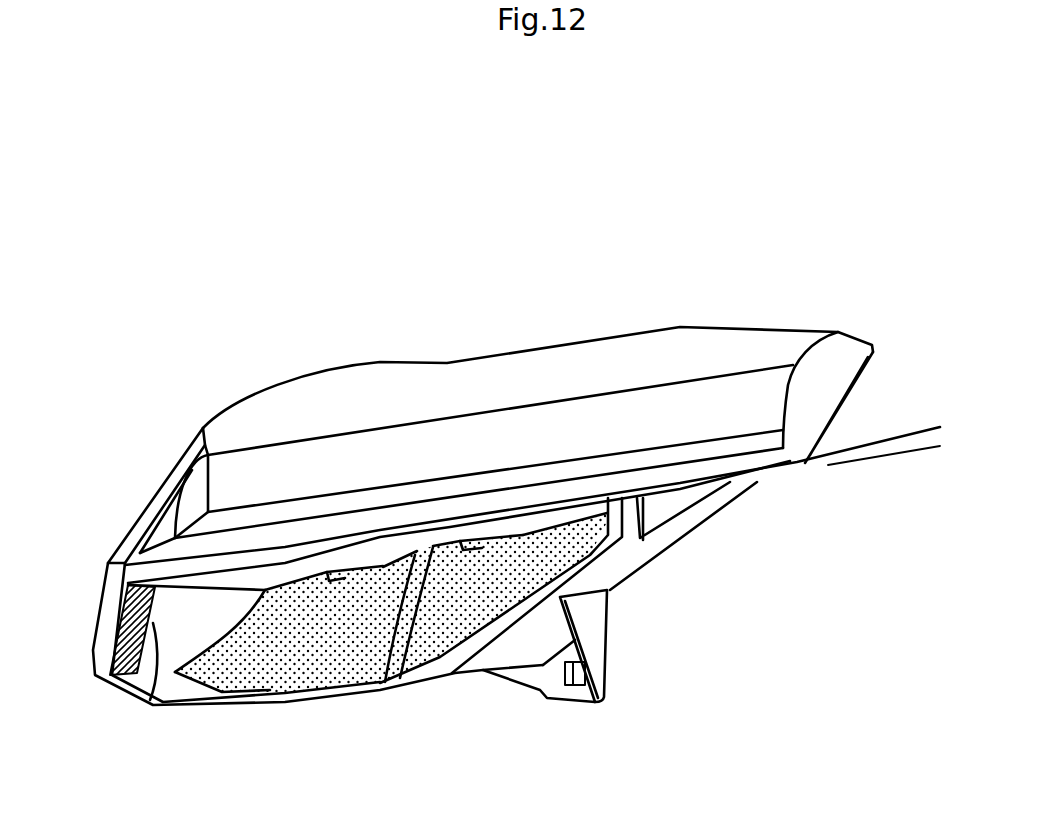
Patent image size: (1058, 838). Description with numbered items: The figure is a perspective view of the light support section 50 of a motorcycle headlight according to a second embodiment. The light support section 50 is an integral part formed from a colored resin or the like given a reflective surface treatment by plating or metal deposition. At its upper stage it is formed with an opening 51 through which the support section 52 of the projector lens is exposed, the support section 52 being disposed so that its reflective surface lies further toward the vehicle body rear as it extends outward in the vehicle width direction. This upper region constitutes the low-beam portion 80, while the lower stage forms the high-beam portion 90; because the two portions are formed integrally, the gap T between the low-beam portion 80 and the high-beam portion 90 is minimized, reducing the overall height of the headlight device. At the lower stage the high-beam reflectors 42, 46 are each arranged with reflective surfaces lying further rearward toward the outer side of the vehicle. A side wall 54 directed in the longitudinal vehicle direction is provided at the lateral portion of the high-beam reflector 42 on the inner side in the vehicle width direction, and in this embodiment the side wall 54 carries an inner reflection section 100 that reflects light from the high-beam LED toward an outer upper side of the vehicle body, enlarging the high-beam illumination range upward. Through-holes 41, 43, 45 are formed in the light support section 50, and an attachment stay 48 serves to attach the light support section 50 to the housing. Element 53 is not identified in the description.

The light support section 50 is at (370, 266).
The opening 51 is at (482, 442).
The support section 52 is at (515, 370).
The low-beam portion 80 is at (873, 328).
The gap T is at (921, 490).
The high-beam portion 90 is at (875, 458).
The inner reflection section 100 is at (122, 632).
The side wall 54 is at (155, 692).
The shelf portion 53 is at (222, 578).
The high-beam reflector 42 is at (264, 643).
The through-hole 41 is at (350, 579).
The through-hole 43 is at (488, 547).
The through-hole 45 is at (571, 533).
The high-beam reflector 46 is at (460, 615).
The attachment stay 48 is at (597, 647).